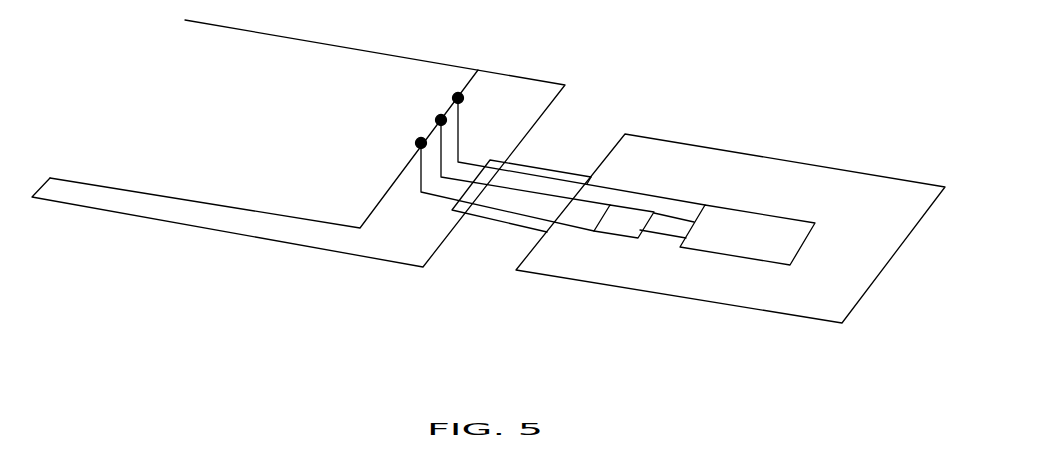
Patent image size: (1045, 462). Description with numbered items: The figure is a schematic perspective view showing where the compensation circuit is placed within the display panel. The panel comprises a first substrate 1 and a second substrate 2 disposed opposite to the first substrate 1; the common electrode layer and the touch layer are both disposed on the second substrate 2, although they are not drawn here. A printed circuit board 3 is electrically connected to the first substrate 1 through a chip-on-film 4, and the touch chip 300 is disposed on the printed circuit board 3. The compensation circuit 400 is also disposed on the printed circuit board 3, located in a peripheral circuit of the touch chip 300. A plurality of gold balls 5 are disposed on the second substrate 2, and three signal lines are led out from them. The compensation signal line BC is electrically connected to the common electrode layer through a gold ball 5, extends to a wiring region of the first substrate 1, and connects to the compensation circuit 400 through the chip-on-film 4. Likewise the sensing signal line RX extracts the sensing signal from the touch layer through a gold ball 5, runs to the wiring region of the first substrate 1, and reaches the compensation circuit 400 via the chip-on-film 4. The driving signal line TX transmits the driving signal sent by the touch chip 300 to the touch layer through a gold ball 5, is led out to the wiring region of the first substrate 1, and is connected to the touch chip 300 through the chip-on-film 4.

The first substrate 1 is at (340, 251).
The second substrate 2 is at (185, 200).
The printed circuit board 3 is at (668, 140).
The chip-on-film 4 is at (495, 220).
The gold balls 5 is at (461, 93).
The touch chip 300 is at (779, 217).
The compensation circuit 400 is at (610, 238).
The compensation signal line BC is at (442, 194).
The driving signal line TX is at (463, 162).
The sensing signal line RX is at (505, 163).